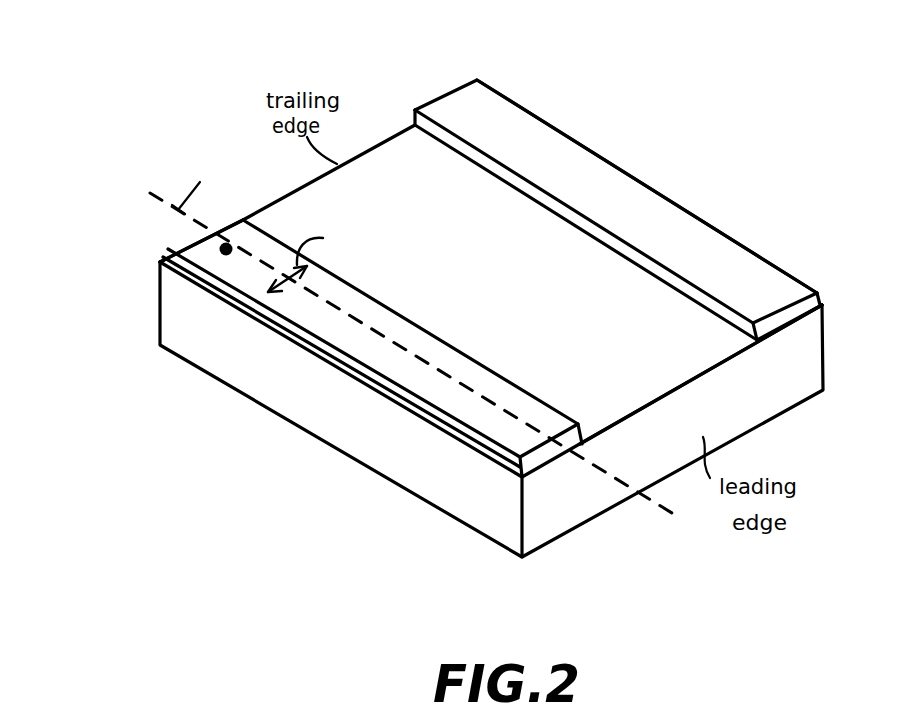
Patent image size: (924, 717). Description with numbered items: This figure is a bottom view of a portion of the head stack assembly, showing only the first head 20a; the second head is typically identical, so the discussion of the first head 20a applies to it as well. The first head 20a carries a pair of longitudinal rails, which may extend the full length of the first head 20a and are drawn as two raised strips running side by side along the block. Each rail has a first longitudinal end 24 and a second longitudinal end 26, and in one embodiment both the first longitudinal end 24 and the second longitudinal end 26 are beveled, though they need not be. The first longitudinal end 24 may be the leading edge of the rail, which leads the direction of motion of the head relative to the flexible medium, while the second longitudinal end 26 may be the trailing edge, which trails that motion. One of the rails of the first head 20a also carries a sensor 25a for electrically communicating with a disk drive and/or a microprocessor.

The first head 20a is at (697, 180).
The first longitudinal end 24 is at (822, 304).
The second longitudinal end 26 is at (465, 70).
The sensor 25a is at (200, 243).